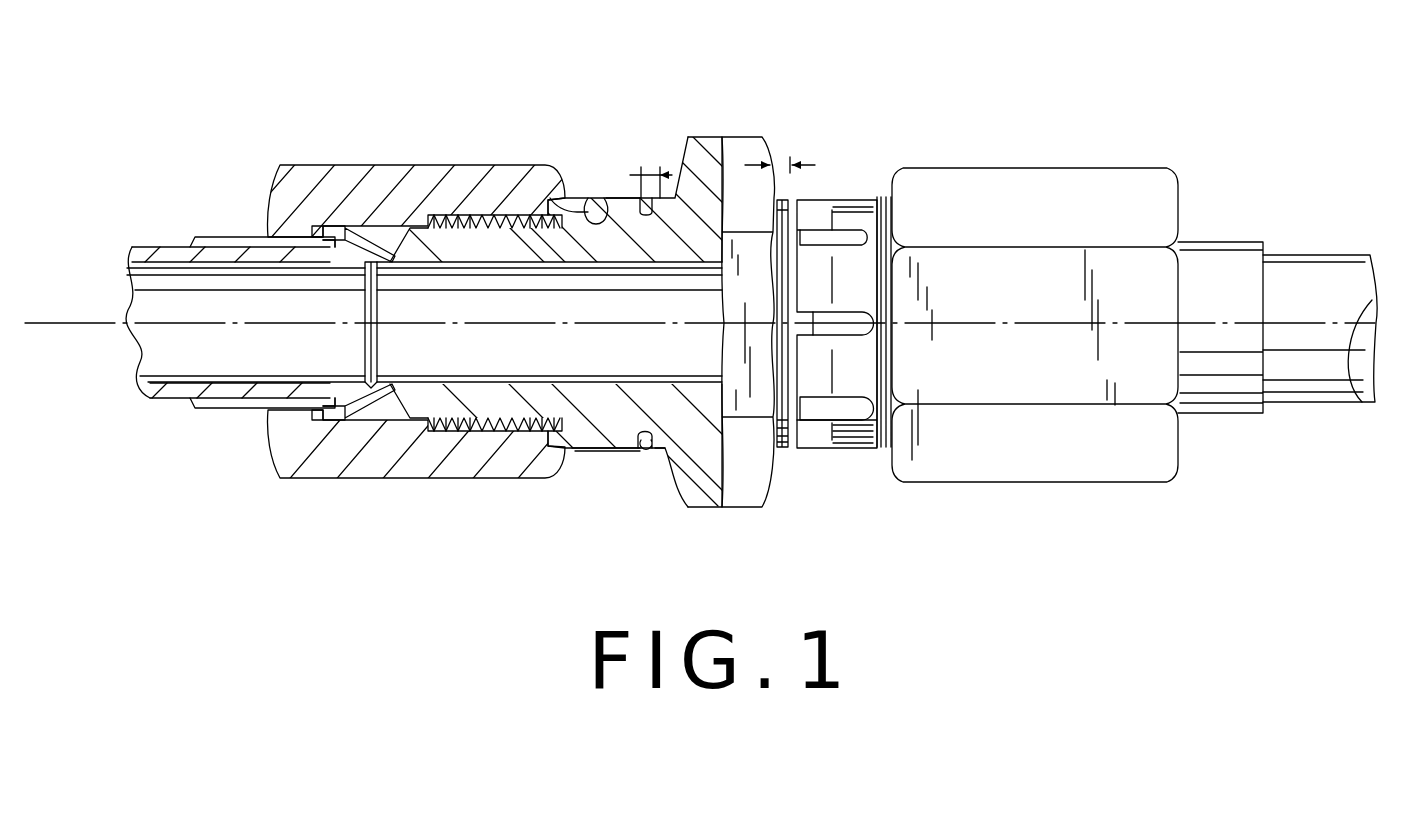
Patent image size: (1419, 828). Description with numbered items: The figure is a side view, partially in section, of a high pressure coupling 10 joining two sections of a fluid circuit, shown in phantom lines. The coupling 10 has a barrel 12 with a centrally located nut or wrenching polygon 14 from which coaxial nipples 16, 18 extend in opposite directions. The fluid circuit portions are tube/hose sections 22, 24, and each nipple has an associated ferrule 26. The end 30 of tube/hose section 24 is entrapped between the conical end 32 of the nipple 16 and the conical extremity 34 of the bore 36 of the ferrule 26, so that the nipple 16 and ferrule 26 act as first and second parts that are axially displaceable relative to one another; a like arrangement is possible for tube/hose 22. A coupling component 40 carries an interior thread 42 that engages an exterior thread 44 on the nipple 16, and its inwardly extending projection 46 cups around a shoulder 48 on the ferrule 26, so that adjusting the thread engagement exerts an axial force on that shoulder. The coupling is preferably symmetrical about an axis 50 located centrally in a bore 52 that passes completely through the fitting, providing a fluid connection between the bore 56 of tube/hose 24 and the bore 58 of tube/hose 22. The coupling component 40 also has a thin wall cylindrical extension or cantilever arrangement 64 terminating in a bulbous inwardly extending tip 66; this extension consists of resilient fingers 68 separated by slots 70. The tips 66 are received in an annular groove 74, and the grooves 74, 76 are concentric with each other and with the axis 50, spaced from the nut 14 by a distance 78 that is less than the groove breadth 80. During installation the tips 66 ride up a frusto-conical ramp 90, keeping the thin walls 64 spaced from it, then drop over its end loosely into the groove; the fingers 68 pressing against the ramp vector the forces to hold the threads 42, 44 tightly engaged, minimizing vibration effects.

The coupling 10 is at (803, 92).
The barrel 12 is at (665, 457).
The nut or wrenching polygon 14 is at (712, 142).
The nipple 16 is at (597, 416).
The nipple 18 is at (785, 450).
The tube/hose section 22 is at (1326, 256).
The tube/hose section 24 is at (162, 247).
The ferrule 26 is at (372, 224).
The end of tube/hose section 30 is at (356, 438).
The conical end of nipple 32 is at (405, 412).
The conical extremity of ferrule bore 34 is at (384, 262).
The bore of ferrule 36 is at (228, 400).
The coupling component 40 is at (462, 480).
The interior thread 42 is at (440, 434).
The exterior thread 44 is at (497, 418).
The inwardly extending projection 46 is at (282, 224).
The shoulder 48 is at (330, 240).
The axis 50 is at (1042, 323).
The bore 52 is at (498, 302).
The bore of tube/hose 56 is at (172, 303).
The bore of tube/hose 58 is at (1352, 352).
The thin wall cylindrical extension or cantilever arrangement 64 is at (595, 452).
The bulbous inwardly extending tip 66 is at (648, 450).
The fingers 68 is at (815, 450).
The slots 70 is at (810, 398).
The annular groove or depression 74 is at (650, 213).
The annular groove 76 is at (810, 230).
The distance 78 is at (785, 170).
The breadth of annular groove 80 is at (651, 166).
The ramp 90 is at (597, 206).